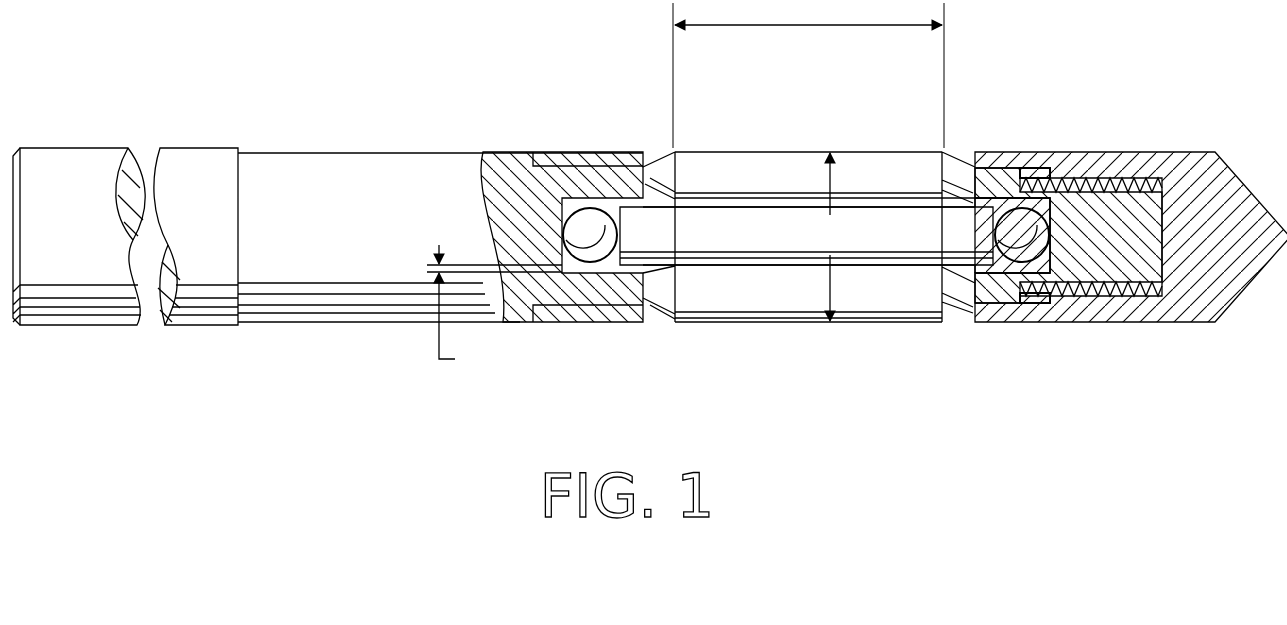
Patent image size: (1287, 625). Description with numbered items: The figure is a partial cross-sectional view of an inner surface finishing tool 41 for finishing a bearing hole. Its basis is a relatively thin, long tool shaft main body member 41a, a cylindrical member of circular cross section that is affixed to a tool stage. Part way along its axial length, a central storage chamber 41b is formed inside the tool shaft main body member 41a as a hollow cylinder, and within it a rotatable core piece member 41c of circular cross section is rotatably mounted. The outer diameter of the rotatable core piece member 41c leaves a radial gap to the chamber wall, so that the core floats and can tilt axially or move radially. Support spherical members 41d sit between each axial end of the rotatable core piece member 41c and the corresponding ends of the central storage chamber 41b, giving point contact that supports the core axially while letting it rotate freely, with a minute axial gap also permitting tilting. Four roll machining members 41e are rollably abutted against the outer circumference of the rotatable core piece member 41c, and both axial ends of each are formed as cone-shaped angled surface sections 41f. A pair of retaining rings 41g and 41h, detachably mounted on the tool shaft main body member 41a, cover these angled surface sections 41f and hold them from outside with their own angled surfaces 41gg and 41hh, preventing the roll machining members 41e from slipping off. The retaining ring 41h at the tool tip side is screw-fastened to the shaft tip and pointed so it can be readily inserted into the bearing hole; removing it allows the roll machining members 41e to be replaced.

The inner surface finishing tool 41 is at (650, 200).
The tool shaft main body member 41a is at (340, 190).
The central storage chamber 41b is at (549, 258).
The rotatable core piece member 41c is at (903, 238).
The support spherical members 41d is at (590, 228).
The roll machining members 41e is at (763, 168).
The cone-shaped angled surface sections 41f is at (661, 150).
The retaining ring 41g is at (543, 322).
The angled surface of retaining ring 41gg is at (640, 287).
The retaining ring 41h is at (1131, 251).
The angled surface of retaining ring 41hh is at (1030, 165).